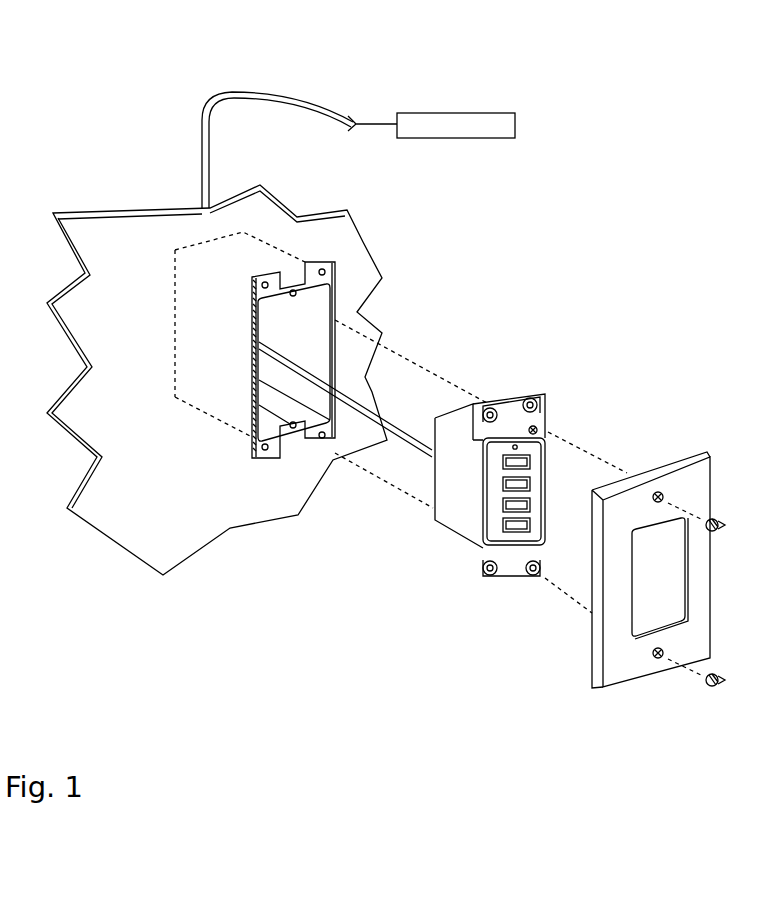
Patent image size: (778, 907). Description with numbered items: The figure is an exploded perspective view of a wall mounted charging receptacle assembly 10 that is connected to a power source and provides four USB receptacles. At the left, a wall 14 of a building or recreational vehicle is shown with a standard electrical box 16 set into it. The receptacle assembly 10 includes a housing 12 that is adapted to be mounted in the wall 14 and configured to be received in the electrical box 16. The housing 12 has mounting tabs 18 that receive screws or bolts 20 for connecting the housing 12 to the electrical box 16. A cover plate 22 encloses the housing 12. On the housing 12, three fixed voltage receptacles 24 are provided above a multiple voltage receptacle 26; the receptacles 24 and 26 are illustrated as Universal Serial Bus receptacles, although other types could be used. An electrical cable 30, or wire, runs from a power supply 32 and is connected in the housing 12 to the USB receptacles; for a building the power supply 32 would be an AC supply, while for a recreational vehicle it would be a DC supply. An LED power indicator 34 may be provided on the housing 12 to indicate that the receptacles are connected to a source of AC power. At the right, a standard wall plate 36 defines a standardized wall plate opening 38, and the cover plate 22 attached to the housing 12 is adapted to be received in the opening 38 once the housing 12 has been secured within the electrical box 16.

The receptacle assembly 10 is at (513, 392).
The housing 12 is at (464, 416).
The wall 14 is at (355, 257).
The electrical box 16 is at (318, 352).
The mounting tabs 18 is at (484, 568).
The screws or bolts 20 is at (544, 570).
The cover plate 22 is at (540, 481).
The fixed voltage receptacles 24 is at (503, 505).
The multiple voltage receptacle 26 is at (503, 527).
The electrical cable 30 is at (212, 108).
The power supply 32 is at (500, 112).
The LED power indicator 34 is at (518, 446).
The wall plate 36 is at (615, 660).
The wall plate opening 38 is at (648, 540).